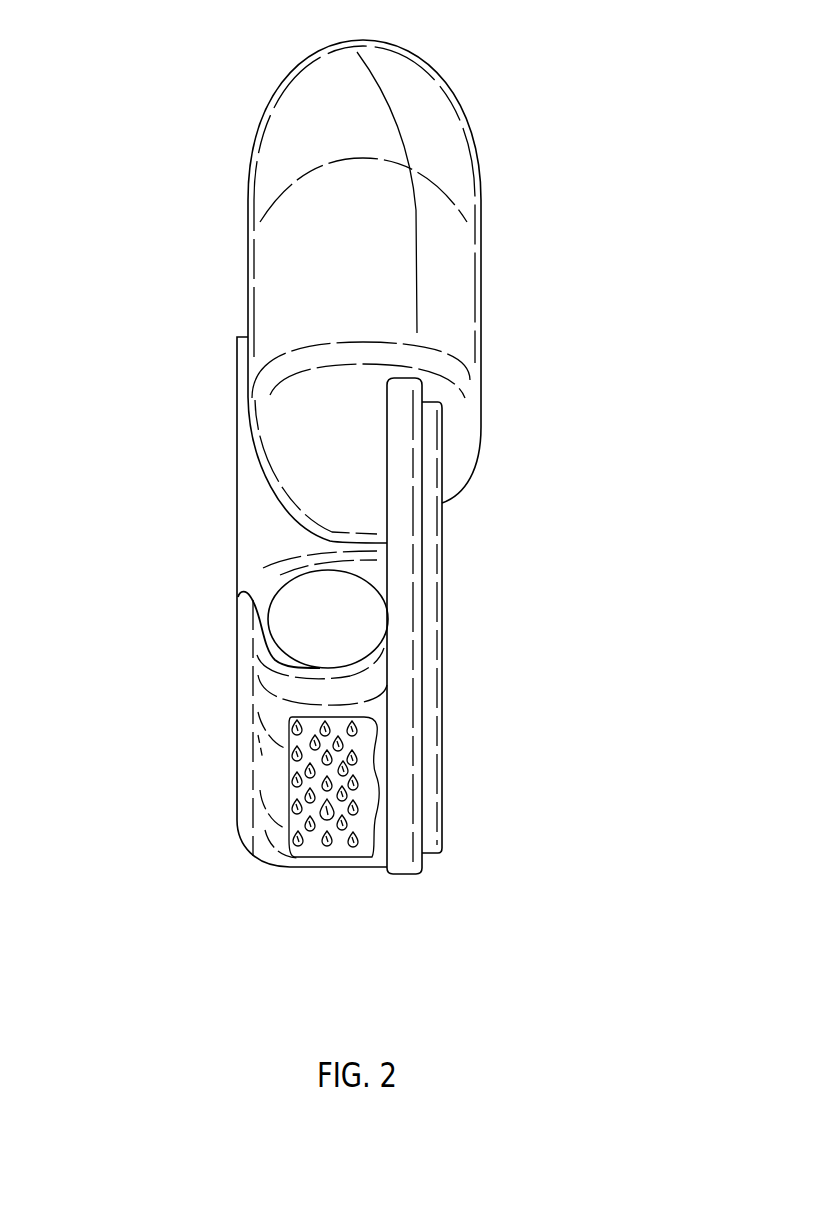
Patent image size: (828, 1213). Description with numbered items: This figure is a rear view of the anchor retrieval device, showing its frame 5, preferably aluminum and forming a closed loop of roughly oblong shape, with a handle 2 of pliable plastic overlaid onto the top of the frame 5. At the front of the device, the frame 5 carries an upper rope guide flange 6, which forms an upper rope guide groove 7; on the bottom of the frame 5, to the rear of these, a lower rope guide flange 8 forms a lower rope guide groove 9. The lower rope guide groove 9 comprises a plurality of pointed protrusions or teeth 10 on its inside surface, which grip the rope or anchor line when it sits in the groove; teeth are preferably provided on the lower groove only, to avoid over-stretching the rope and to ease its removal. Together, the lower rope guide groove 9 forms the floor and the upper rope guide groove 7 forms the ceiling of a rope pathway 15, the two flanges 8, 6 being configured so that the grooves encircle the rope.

The handle 2 is at (451, 250).
The frame 5 is at (400, 623).
The upper rope guide flange 6 is at (260, 533).
The upper rope guide groove 7 is at (260, 579).
The lower rope guide flange 8 is at (245, 700).
The lower rope guide groove 9 is at (340, 693).
The teeth 10 is at (384, 774).
The rope pathway 15 is at (330, 612).